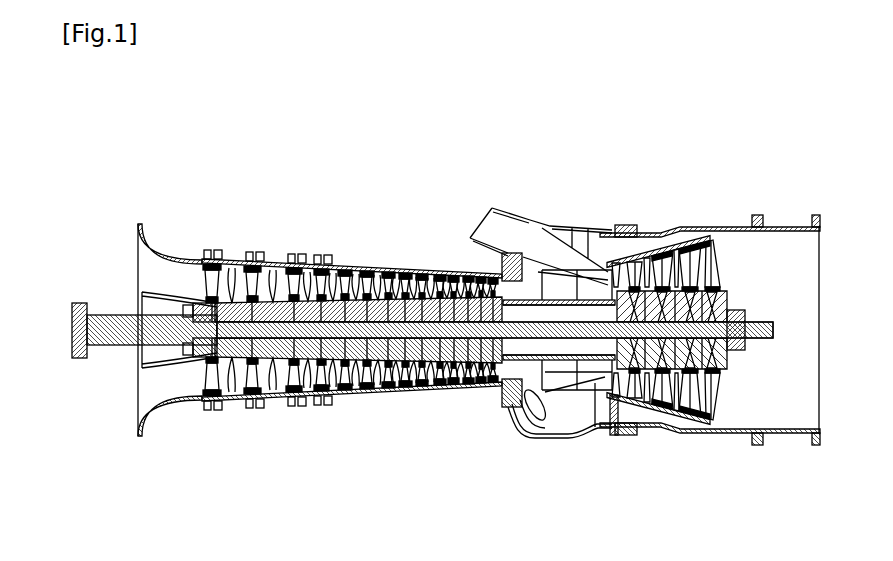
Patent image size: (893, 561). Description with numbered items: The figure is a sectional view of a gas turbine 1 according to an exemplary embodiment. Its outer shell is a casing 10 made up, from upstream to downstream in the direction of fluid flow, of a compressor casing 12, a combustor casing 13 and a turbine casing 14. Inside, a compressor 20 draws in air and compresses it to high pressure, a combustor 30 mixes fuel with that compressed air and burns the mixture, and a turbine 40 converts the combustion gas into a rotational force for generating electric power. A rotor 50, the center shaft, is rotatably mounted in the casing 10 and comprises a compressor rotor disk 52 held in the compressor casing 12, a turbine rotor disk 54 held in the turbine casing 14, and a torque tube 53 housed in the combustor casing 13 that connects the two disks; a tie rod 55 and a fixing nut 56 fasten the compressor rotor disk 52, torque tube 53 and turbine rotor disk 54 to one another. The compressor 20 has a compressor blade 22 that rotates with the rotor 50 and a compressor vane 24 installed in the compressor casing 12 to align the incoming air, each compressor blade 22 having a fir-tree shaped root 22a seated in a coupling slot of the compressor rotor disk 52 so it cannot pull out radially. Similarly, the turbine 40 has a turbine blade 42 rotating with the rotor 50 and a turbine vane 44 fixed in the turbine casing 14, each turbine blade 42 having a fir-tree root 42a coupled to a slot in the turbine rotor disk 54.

The gas turbine 1 is at (160, 89).
The casing 10 is at (647, 146).
The compressor casing 12 is at (404, 264).
The combustor casing 13 is at (546, 224).
The turbine casing 14 is at (652, 226).
The compressor 20 is at (265, 216).
The compressor blade 22 is at (288, 277).
The root 22a is at (330, 277).
The compressor vane 24 is at (253, 280).
The combustor 30 is at (488, 227).
The turbine 40 is at (698, 184).
The turbine blade 42 is at (713, 260).
The root 42a is at (722, 290).
The turbine vane 44 is at (692, 260).
The rotor 50 is at (733, 480).
The compressor rotor disk 52 is at (378, 367).
The torque tube 53 is at (557, 350).
The turbine rotor disk 54 is at (677, 345).
The tie rod 55 is at (447, 340).
The fixing nut 56 is at (745, 352).